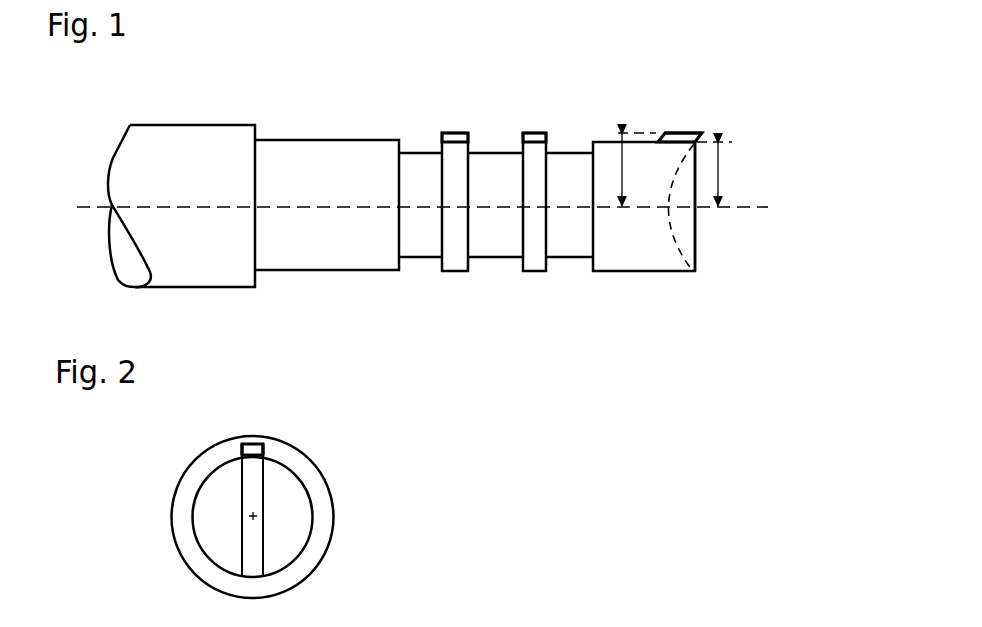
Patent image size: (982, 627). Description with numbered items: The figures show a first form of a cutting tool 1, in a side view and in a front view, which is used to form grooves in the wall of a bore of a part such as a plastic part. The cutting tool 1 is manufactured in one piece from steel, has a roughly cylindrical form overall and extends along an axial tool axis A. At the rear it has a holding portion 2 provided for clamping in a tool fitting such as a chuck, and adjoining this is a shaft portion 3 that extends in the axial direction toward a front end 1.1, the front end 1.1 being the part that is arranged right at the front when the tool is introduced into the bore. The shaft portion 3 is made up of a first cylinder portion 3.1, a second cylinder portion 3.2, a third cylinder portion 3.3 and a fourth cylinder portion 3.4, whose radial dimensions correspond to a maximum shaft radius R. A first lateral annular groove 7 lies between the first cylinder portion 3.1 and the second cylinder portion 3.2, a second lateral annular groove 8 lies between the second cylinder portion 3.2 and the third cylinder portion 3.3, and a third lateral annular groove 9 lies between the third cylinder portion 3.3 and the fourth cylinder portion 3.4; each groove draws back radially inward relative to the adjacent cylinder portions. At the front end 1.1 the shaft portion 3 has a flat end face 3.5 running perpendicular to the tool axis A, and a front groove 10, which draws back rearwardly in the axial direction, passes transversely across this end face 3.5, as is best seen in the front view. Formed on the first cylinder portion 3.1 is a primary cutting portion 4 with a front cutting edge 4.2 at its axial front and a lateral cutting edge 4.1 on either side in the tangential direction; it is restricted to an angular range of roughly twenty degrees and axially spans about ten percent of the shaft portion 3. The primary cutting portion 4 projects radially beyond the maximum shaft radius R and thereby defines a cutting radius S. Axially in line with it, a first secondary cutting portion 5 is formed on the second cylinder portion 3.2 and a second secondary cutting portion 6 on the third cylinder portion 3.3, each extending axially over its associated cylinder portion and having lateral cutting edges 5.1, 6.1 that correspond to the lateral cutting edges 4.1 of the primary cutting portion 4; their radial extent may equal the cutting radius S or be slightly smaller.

In FIG. 1, the cutting tool 1 is at (616, 60).
In FIG. 2, the cutting tool 1 is at (332, 421).
In FIG. 1, the front end 1.1 is at (768, 175).
In FIG. 1, the holding portion 2 is at (184, 111).
In FIG. 2, the holding portion 2 is at (171, 486).
In FIG. 1, the shaft portion 3 is at (356, 119).
In FIG. 2, the shaft portion 3 is at (208, 466).
In FIG. 1, the first cylinder portion 3.1 is at (650, 283).
In FIG. 1, the second cylinder portion 3.2 is at (541, 275).
In FIG. 1, the third cylinder portion 3.3 is at (461, 275).
In FIG. 1, the fourth cylinder portion 3.4 is at (323, 285).
In FIG. 1, the end face 3.5 is at (702, 248).
In FIG. 2, the end face 3.5 is at (297, 541).
In FIG. 1, the primary cutting portion 4 is at (681, 130).
In FIG. 2, the primary cutting portion 4 is at (253, 441).
In FIG. 1, the lateral cutting edge 4.1 is at (680, 137).
In FIG. 2, the lateral cutting edge 4.1 is at (236, 448).
In FIG. 1, the front cutting edge 4.2 is at (707, 135).
In FIG. 2, the front cutting edge 4.2 is at (252, 449).
In FIG. 1, the first secondary cutting portion 5 is at (531, 130).
In FIG. 1, the lateral cutting edge 5.1 is at (534, 137).
In FIG. 1, the second secondary cutting portion 6 is at (452, 130).
In FIG. 1, the lateral cutting edge 6.1 is at (455, 137).
In FIG. 1, the first lateral annular groove 7 is at (572, 139).
In FIG. 1, the second lateral annular groove 8 is at (500, 139).
In FIG. 1, the third lateral annular groove 9 is at (421, 139).
In FIG. 1, the front groove 10 is at (694, 214).
In FIG. 2, the front groove 10 is at (257, 498).
In FIG. 1, the tool axis A is at (186, 206).
In FIG. 2, the tool axis A is at (250, 518).
In FIG. 1, the cutting radius S is at (637, 169).
In FIG. 1, the maximum shaft radius R is at (718, 174).